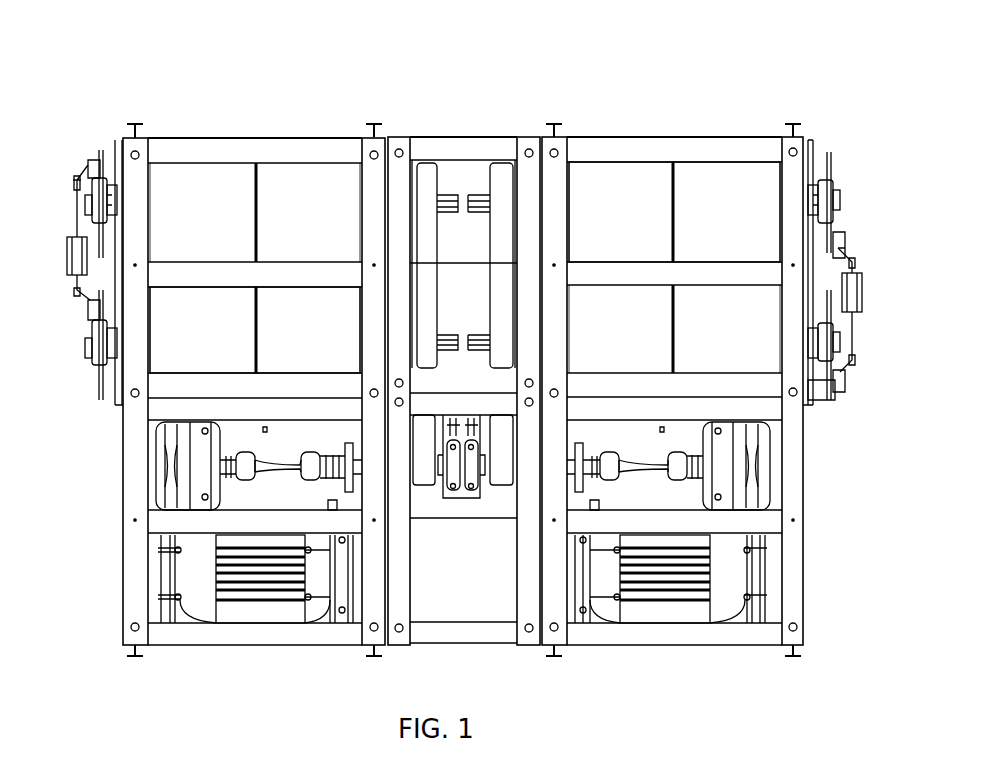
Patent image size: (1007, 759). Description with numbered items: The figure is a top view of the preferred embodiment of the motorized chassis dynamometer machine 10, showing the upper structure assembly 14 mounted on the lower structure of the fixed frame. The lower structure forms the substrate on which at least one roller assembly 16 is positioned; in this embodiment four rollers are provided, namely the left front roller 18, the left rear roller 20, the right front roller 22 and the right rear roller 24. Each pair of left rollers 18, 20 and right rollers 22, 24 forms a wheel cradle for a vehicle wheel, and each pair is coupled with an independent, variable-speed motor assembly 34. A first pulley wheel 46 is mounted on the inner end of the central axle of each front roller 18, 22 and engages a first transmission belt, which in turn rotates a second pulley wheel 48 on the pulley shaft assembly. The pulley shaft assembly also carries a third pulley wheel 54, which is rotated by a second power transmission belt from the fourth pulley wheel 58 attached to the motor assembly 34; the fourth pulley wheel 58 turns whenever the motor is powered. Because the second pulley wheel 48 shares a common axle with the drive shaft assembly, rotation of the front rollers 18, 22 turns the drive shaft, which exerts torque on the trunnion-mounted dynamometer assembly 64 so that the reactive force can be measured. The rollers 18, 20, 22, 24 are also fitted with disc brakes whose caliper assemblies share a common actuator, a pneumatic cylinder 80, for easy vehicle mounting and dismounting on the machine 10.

The dynamometer machine 10 is at (478, 116).
The upper structure assembly 14 is at (612, 150).
The roller assembly 16 is at (745, 190).
The left front roller 18 is at (202, 177).
The left rear roller 20 is at (183, 337).
The right front roller 22 is at (757, 220).
The right rear roller 24 is at (752, 342).
The independent motor assembly 34 is at (272, 593).
The first pulley wheel 46 is at (488, 178).
The second pulley wheel 48 is at (424, 478).
The third pulley wheel 54 is at (343, 455).
The fourth pulley wheel 58 is at (338, 595).
The dynamometer assembly 64 is at (175, 468).
The pneumatic cylinder 80 is at (67, 262).